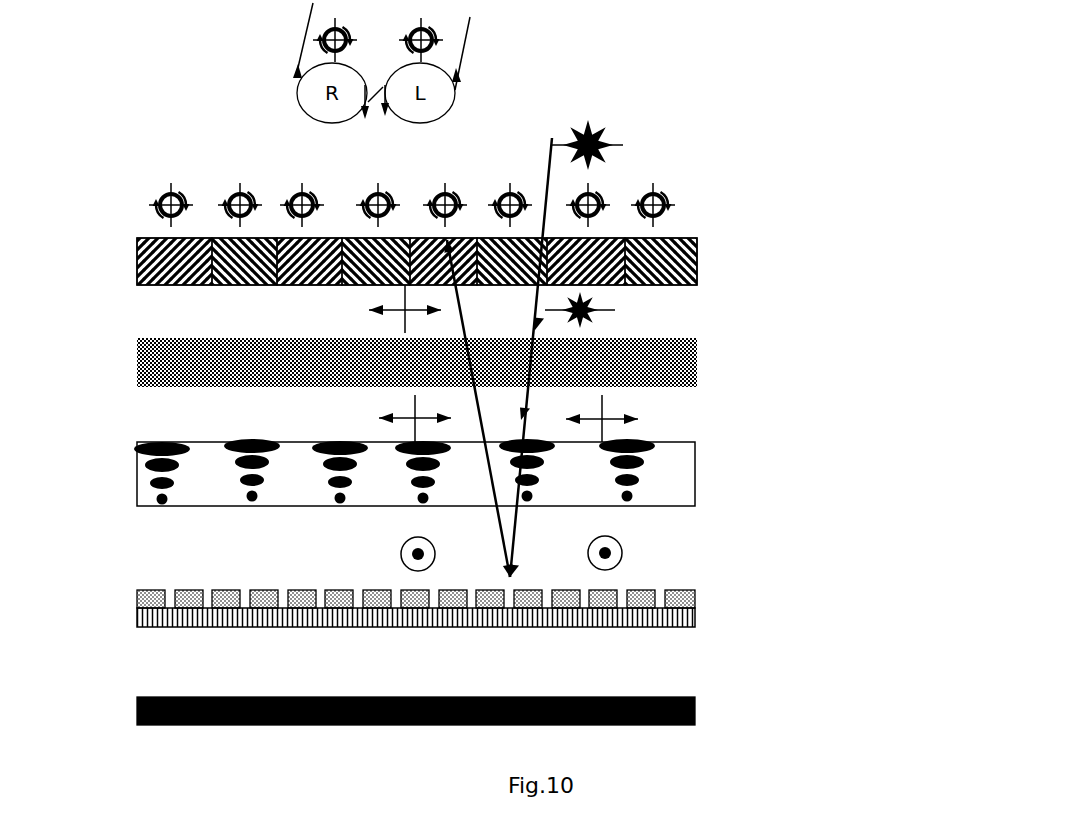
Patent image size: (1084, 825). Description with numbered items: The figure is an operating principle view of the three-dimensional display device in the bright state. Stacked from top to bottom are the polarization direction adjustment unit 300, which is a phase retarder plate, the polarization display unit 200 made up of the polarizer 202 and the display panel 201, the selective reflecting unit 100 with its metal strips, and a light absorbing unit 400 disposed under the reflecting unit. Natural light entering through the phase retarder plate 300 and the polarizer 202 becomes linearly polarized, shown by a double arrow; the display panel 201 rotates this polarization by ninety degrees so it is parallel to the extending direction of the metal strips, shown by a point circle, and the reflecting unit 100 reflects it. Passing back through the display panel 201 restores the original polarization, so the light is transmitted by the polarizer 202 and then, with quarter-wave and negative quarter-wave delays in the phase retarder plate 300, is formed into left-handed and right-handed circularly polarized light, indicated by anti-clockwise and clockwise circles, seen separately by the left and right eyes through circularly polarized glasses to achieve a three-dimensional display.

The reflecting unit 100 is at (697, 600).
The polarization display unit 200 is at (506, 422).
The display panel 201 is at (454, 472).
The polarizer 202 is at (697, 362).
The polarization direction adjustment unit 300 is at (697, 268).
The light absorbing unit 400 is at (713, 719).